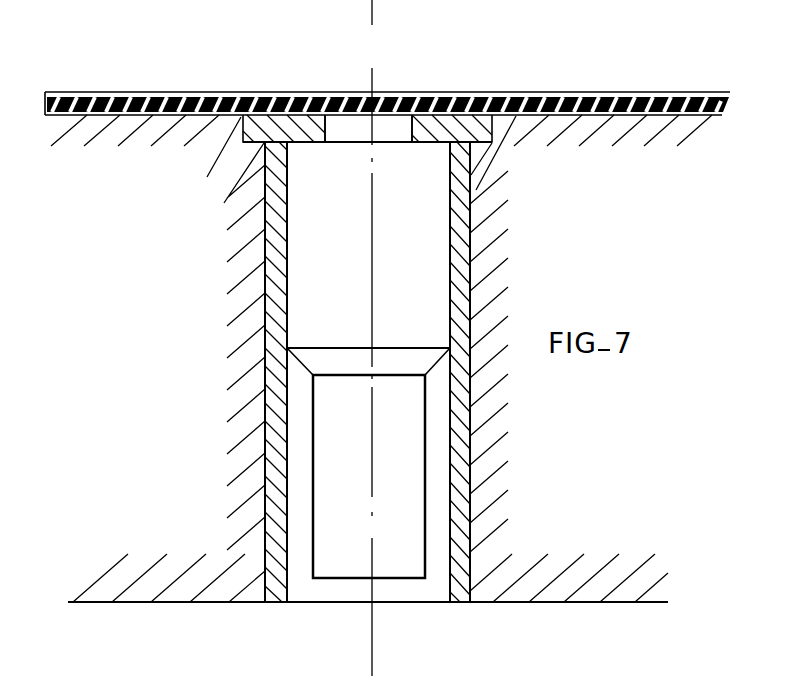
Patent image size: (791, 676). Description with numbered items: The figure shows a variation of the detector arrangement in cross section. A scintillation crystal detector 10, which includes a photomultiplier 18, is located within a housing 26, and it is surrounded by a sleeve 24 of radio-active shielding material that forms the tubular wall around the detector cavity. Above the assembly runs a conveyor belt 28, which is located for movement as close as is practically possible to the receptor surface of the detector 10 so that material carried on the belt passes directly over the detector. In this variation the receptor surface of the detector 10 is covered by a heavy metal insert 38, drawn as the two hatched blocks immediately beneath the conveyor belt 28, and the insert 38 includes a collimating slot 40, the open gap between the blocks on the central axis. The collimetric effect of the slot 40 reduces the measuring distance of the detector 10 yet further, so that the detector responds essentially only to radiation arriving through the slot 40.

The scintillation crystal detector 10 is at (340, 278).
The photomultiplier 18 is at (416, 447).
The sleeve of radio-active shielding material 24 is at (462, 245).
The housing 26 is at (174, 363).
The conveyor belt 28 is at (550, 108).
The heavy metal insert 38 is at (477, 125).
The collimating slot 40 is at (398, 125).